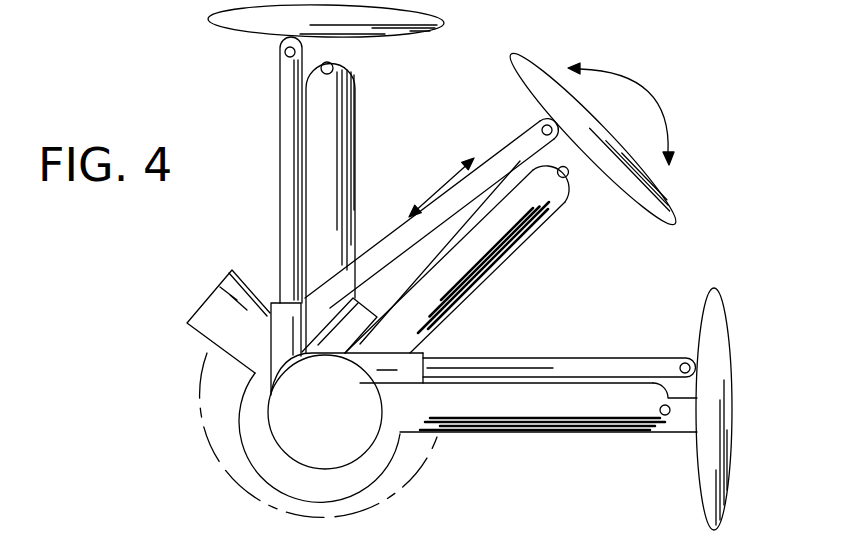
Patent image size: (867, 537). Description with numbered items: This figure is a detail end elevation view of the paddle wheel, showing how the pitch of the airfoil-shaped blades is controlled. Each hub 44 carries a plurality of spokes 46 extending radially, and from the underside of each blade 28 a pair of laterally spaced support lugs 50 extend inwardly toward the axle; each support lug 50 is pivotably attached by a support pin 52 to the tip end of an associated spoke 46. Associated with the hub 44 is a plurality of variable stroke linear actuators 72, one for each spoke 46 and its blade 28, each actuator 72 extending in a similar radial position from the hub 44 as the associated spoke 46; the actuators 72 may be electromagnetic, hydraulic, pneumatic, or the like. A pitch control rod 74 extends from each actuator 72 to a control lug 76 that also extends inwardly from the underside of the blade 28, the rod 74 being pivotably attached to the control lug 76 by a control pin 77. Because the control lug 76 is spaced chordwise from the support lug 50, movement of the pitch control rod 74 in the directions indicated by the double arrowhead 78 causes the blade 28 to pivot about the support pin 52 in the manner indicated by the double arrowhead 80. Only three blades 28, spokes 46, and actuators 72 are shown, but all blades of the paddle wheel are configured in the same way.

The blade 28 is at (403, 42).
The hub 44 is at (253, 413).
The spoke 46 is at (546, 212).
The support lug 50 is at (585, 167).
The support pin 52 is at (571, 178).
The variable stroke linear actuator 72 is at (360, 320).
The pitch control rod 74 is at (508, 157).
The control lug 76 is at (536, 110).
The control pin 77 is at (542, 120).
The double arrowhead 78 is at (436, 187).
The double arrowhead 80 is at (650, 100).